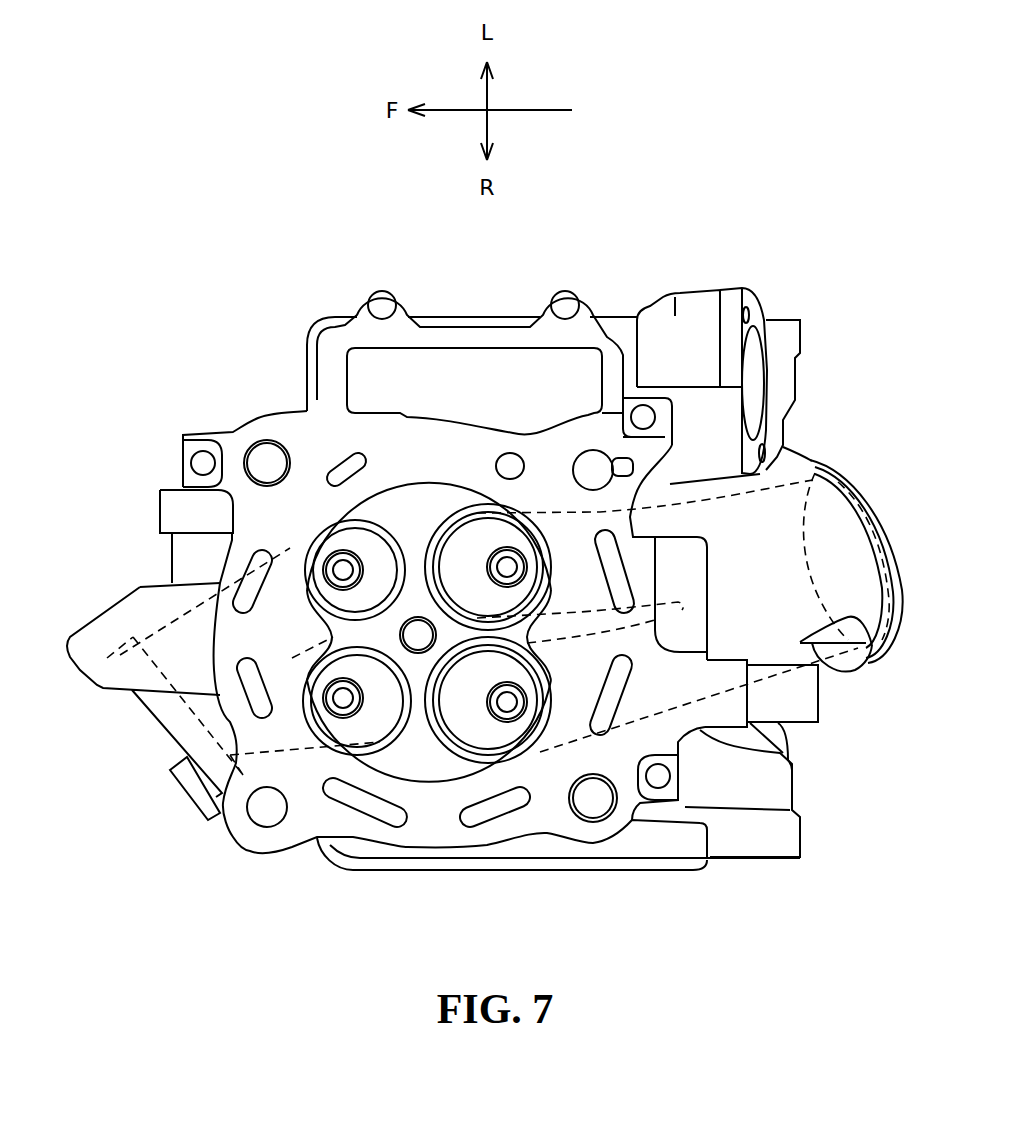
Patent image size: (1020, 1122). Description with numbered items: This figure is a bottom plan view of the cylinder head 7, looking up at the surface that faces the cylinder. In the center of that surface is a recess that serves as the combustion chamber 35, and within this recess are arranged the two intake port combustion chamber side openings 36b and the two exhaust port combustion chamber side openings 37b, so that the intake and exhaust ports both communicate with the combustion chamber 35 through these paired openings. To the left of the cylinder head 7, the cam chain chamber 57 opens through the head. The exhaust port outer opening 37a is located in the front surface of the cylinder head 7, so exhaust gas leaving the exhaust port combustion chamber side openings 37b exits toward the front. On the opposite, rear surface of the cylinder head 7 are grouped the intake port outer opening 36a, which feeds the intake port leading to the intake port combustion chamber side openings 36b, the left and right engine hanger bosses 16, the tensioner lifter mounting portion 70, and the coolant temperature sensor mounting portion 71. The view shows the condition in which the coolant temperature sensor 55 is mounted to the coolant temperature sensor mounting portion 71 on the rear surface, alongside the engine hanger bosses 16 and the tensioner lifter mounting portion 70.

The cylinder head 7 is at (193, 305).
The engine hanger bosses 16 is at (793, 336).
The combustion chamber 35 is at (407, 510).
The intake port outer opening 36a is at (871, 497).
The intake port combustion chamber side openings 36b is at (462, 575).
The exhaust port outer opening 37a is at (160, 727).
The exhaust port combustion chamber side openings 37b is at (377, 578).
The coolant temperature sensor 55 is at (819, 699).
The cam chain chamber 57 is at (468, 382).
The tensioner lifter mounting portion 70 is at (752, 390).
The coolant temperature sensor mounting portion 71 is at (783, 753).